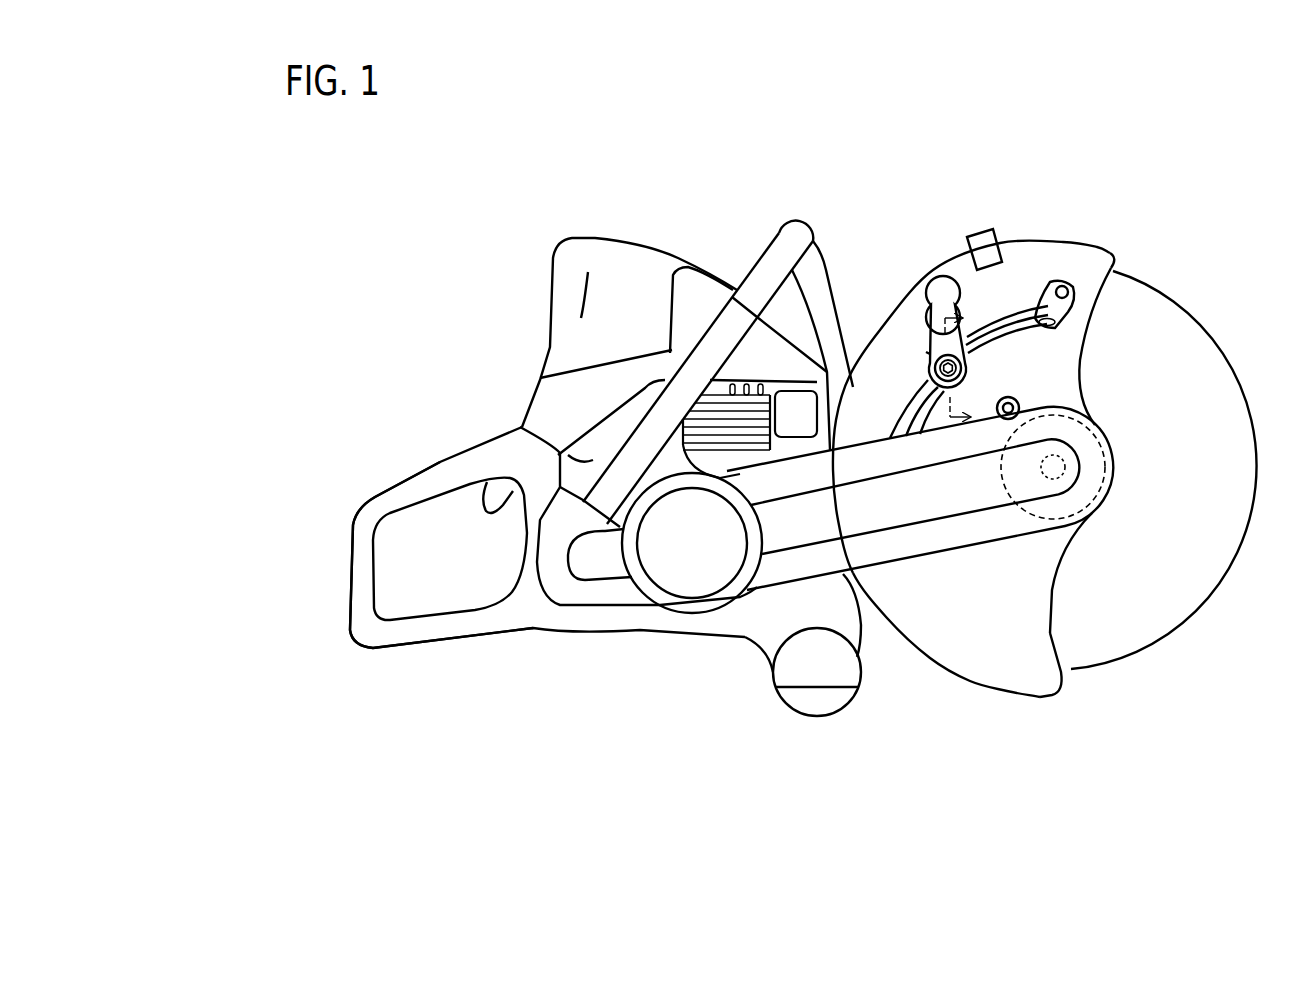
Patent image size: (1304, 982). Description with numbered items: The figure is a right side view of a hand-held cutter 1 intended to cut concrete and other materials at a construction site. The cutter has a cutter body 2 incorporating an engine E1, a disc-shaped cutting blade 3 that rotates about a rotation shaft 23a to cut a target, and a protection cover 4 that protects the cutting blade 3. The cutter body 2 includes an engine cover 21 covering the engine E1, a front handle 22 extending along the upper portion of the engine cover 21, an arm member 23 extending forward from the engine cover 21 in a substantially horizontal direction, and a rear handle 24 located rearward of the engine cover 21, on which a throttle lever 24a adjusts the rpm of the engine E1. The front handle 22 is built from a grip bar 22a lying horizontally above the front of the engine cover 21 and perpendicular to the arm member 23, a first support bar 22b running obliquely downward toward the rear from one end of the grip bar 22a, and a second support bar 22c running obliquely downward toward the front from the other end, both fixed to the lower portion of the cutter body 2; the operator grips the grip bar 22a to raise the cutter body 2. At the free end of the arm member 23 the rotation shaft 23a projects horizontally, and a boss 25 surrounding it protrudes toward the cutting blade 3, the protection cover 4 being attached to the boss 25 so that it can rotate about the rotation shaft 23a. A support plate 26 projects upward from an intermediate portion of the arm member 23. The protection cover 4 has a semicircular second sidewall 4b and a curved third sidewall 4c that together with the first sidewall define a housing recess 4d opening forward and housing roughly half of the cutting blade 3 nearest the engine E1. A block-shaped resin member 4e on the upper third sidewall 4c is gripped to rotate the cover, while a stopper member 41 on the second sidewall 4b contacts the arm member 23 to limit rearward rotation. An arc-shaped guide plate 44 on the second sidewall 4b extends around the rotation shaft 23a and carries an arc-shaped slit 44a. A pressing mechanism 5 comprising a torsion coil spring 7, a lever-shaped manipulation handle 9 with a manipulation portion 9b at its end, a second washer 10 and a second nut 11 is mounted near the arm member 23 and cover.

The hand-held cutter 1 is at (1232, 226).
The cutter body 2 is at (713, 640).
The cutting blade 3 is at (1242, 375).
The protection cover 4 is at (1062, 232).
The second sidewall 4b is at (1012, 668).
The third sidewall 4c is at (941, 668).
The housing recess 4d is at (1115, 264).
The resin member 4e is at (983, 231).
The pressing mechanism 5 is at (916, 328).
The torsion coil spring 7 is at (933, 386).
The manipulation handle 9 is at (937, 278).
The manipulation portion 9b is at (947, 288).
The second washer 10 is at (963, 368).
The second nut 11 is at (937, 368).
The engine cover 21 is at (697, 298).
The front handle 22 is at (908, 162).
The grip bar 22a is at (814, 237).
The first support bar 22b is at (763, 268).
The second support bar 22c is at (818, 272).
The arm member 23 is at (954, 552).
The rotation shaft 23a is at (1066, 467).
The rear handle 24 is at (440, 460).
The throttle lever 24a is at (490, 513).
The boss 25 is at (1102, 482).
The support plate 26 is at (897, 424).
The stopper member 41 is at (1019, 404).
The guide plate 44 is at (1027, 309).
The arc-shaped slit 44a is at (1066, 322).
The engine E1 is at (712, 388).